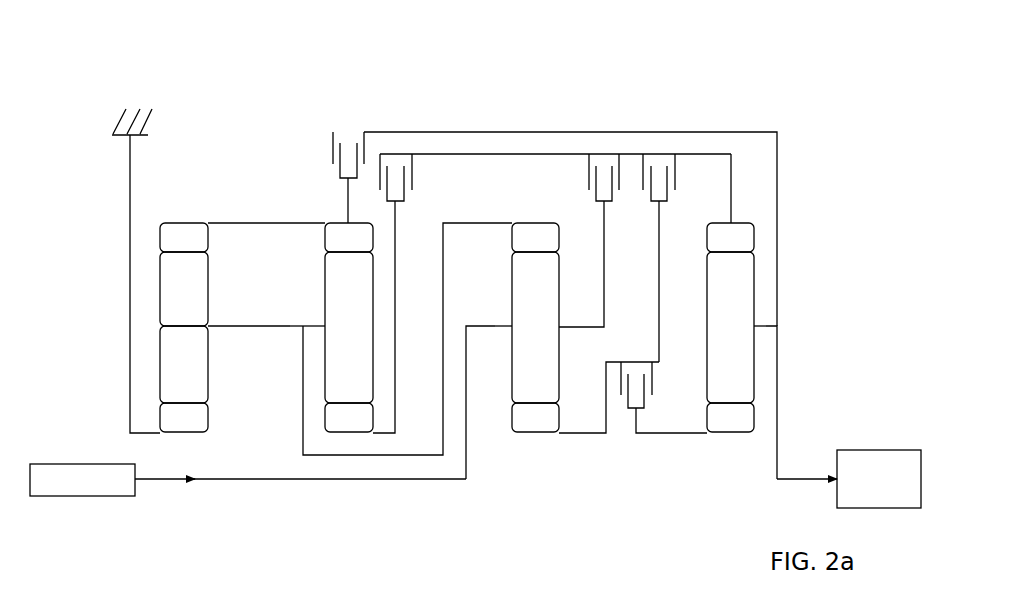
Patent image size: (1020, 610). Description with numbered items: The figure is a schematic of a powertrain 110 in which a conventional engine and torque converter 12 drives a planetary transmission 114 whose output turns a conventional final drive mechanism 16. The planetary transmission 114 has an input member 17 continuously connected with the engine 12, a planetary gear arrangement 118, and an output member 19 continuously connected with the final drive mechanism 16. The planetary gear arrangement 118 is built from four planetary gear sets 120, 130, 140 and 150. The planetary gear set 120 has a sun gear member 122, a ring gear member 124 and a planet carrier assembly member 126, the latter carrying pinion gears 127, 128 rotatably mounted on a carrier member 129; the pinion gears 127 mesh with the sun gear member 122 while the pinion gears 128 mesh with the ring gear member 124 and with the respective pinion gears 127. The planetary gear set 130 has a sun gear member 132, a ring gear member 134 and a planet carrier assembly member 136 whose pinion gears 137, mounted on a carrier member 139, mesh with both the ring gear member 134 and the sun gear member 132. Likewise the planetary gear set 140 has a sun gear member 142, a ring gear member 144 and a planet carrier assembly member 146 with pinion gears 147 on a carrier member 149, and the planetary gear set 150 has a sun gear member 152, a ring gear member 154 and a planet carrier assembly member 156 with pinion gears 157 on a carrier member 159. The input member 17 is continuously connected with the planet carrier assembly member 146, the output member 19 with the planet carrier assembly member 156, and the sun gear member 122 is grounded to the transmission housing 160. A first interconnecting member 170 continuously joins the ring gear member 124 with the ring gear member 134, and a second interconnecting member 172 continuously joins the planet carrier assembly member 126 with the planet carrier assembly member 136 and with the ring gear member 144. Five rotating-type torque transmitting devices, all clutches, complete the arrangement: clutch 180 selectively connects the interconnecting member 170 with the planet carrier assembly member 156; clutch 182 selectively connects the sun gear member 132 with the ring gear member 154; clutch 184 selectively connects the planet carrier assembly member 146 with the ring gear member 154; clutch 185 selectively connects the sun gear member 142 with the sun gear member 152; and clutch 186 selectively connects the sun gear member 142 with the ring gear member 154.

The engine and torque converter 12 is at (108, 464).
The final drive mechanism 16 is at (872, 450).
The input member 17 is at (175, 479).
The output member 19 is at (798, 478).
The powertrain 110 is at (420, 93).
The planetary transmission 114 is at (514, 92).
The planetary gear arrangement 118 is at (607, 90).
The planetary gear set 120 is at (196, 377).
The sun gear member 122 is at (184, 417).
The ring gear member 124 is at (184, 237).
The planet carrier assembly member 126 is at (211, 323).
The pinion gears 127 is at (184, 364).
The pinion gears 128 is at (184, 289).
The carrier member 129 is at (226, 326).
The planetary gear set 130 is at (351, 377).
The sun gear member 132 is at (349, 417).
The ring gear member 134 is at (349, 237).
The planet carrier assembly member 136 is at (320, 322).
The pinion gears 137 is at (349, 327).
The carrier member 139 is at (318, 318).
The planetary gear set 140 is at (541, 371).
The sun gear member 142 is at (535, 417).
The ring gear member 144 is at (535, 237).
The planet carrier assembly member 146 is at (512, 320).
The pinion gears 147 is at (535, 327).
The carrier member 149 is at (491, 327).
The planetary gear set 150 is at (730, 370).
The sun gear member 152 is at (730, 417).
The ring gear member 154 is at (730, 237).
The planet carrier assembly member 156 is at (760, 322).
The pinion gears 157 is at (730, 327).
The carrier member 159 is at (768, 325).
The transmission housing 160 is at (119, 127).
The first interconnecting member 170 is at (287, 222).
The second interconnecting member 172 is at (303, 381).
The clutch 180 is at (335, 173).
The clutch 182 is at (410, 205).
The clutch 184 is at (620, 205).
The clutch 185 is at (623, 405).
The clutch 186 is at (672, 205).